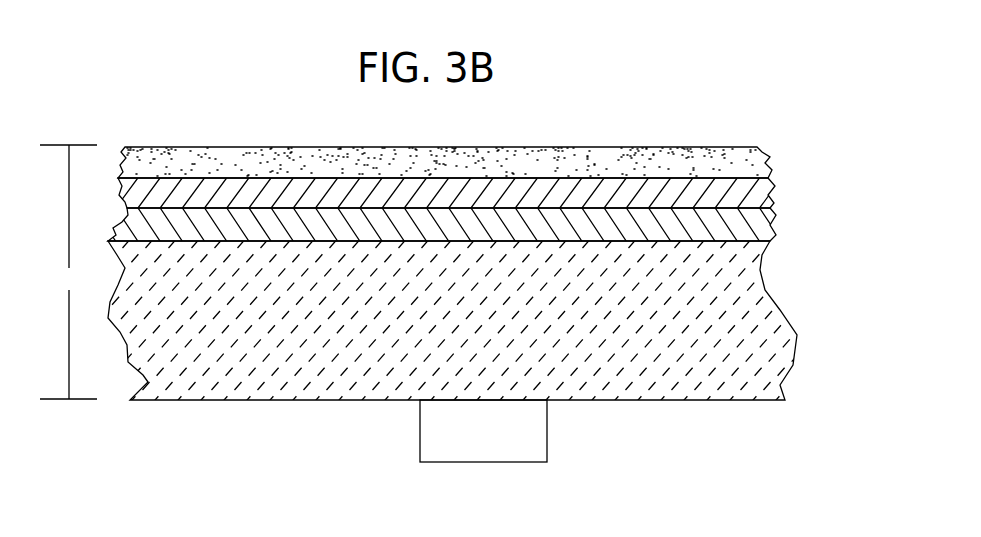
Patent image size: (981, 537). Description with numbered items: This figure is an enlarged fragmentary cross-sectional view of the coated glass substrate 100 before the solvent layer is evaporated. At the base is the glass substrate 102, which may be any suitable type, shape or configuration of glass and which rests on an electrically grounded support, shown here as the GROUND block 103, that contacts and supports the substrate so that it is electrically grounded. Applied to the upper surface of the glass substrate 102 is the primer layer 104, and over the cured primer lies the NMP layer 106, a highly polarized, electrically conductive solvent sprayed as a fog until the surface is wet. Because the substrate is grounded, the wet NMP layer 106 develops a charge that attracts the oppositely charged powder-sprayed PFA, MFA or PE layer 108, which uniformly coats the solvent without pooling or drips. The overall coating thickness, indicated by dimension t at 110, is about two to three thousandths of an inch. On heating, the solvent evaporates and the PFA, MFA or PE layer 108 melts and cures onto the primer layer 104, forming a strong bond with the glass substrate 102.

The coated glass substrate 100 is at (628, 108).
The glass substrate 102 is at (697, 381).
The ground plane 103 is at (547, 432).
The primer layer 104 is at (738, 224).
The NMP layer 106 is at (738, 191).
The PFA, MFA or PE layer 108 is at (738, 163).
The thickness t 110 is at (53, 288).